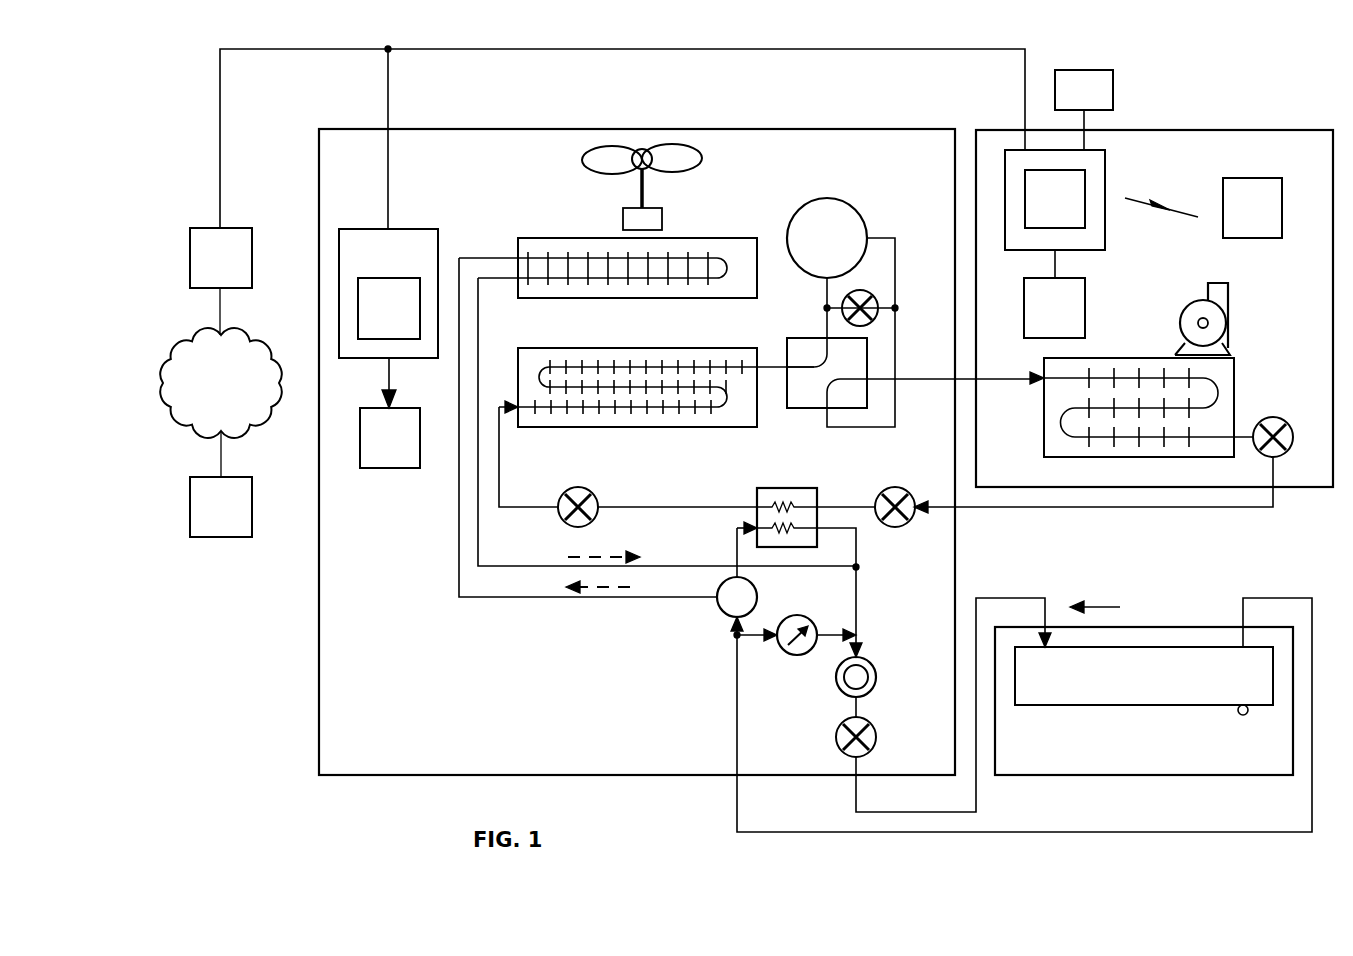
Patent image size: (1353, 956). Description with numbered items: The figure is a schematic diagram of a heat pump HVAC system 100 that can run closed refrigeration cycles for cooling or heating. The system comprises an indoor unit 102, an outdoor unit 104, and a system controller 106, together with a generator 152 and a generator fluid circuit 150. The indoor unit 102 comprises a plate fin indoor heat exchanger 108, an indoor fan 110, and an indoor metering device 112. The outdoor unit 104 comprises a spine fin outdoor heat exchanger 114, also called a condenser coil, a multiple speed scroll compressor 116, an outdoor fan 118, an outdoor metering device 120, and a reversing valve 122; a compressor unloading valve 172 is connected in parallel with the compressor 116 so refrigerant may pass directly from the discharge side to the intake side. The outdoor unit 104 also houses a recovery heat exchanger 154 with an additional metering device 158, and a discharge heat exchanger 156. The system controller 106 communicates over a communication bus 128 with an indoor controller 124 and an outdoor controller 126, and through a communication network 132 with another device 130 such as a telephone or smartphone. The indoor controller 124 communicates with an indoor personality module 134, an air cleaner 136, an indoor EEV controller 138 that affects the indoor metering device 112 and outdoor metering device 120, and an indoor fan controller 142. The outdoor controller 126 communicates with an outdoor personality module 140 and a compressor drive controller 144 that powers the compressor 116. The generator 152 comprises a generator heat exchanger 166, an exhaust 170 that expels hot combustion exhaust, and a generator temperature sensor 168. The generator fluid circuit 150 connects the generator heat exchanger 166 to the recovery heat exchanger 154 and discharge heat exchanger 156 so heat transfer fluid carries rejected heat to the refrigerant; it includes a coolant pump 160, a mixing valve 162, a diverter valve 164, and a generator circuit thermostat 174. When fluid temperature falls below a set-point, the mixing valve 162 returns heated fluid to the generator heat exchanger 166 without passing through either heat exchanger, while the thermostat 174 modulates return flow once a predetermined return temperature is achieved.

The HVAC system 100 is at (215, 740).
The indoor unit 102 is at (1228, 120).
The outdoor unit 104 is at (453, 122).
The system controller 106 is at (203, 270).
The indoor heat exchanger 108 is at (1044, 405).
The indoor fan 110 is at (1230, 315).
The indoor metering device 112 is at (1283, 420).
The outdoor heat exchanger 114 is at (638, 430).
The compressor 116 is at (809, 250).
The outdoor fan 118 is at (584, 162).
The outdoor metering device 120 is at (558, 517).
The reversing valve 122 is at (805, 410).
The indoor controller 124 is at (1105, 182).
The outdoor controller 126 is at (371, 262).
The communication bus 128 is at (318, 49).
The other device 130 is at (203, 519).
The communication network 132 is at (203, 395).
The indoor personality module 134 is at (1037, 211).
The air cleaner 136 is at (1113, 90).
The indoor EEV controller 138 is at (1234, 221).
The outdoor personality module 140 is at (371, 320).
The indoor fan controller 142 is at (1036, 320).
The compressor drive controller 144 is at (372, 449).
The generator fluid circuit 150 is at (428, 655).
The generator 152 is at (1190, 615).
The recovery heat exchanger 154 is at (757, 497).
The discharge heat exchanger 156 is at (598, 237).
The metering device 158 is at (897, 527).
The coolant pump 160 is at (876, 678).
The mixing valve 162 is at (800, 657).
The diverter valve 164 is at (720, 615).
The generator heat exchanger 166 is at (1126, 688).
The generator temperature sensor 168 is at (1245, 716).
The exhaust 170 is at (1100, 606).
The compressor unloading valve 172 is at (876, 297).
The generator circuit thermostat 174 is at (876, 739).